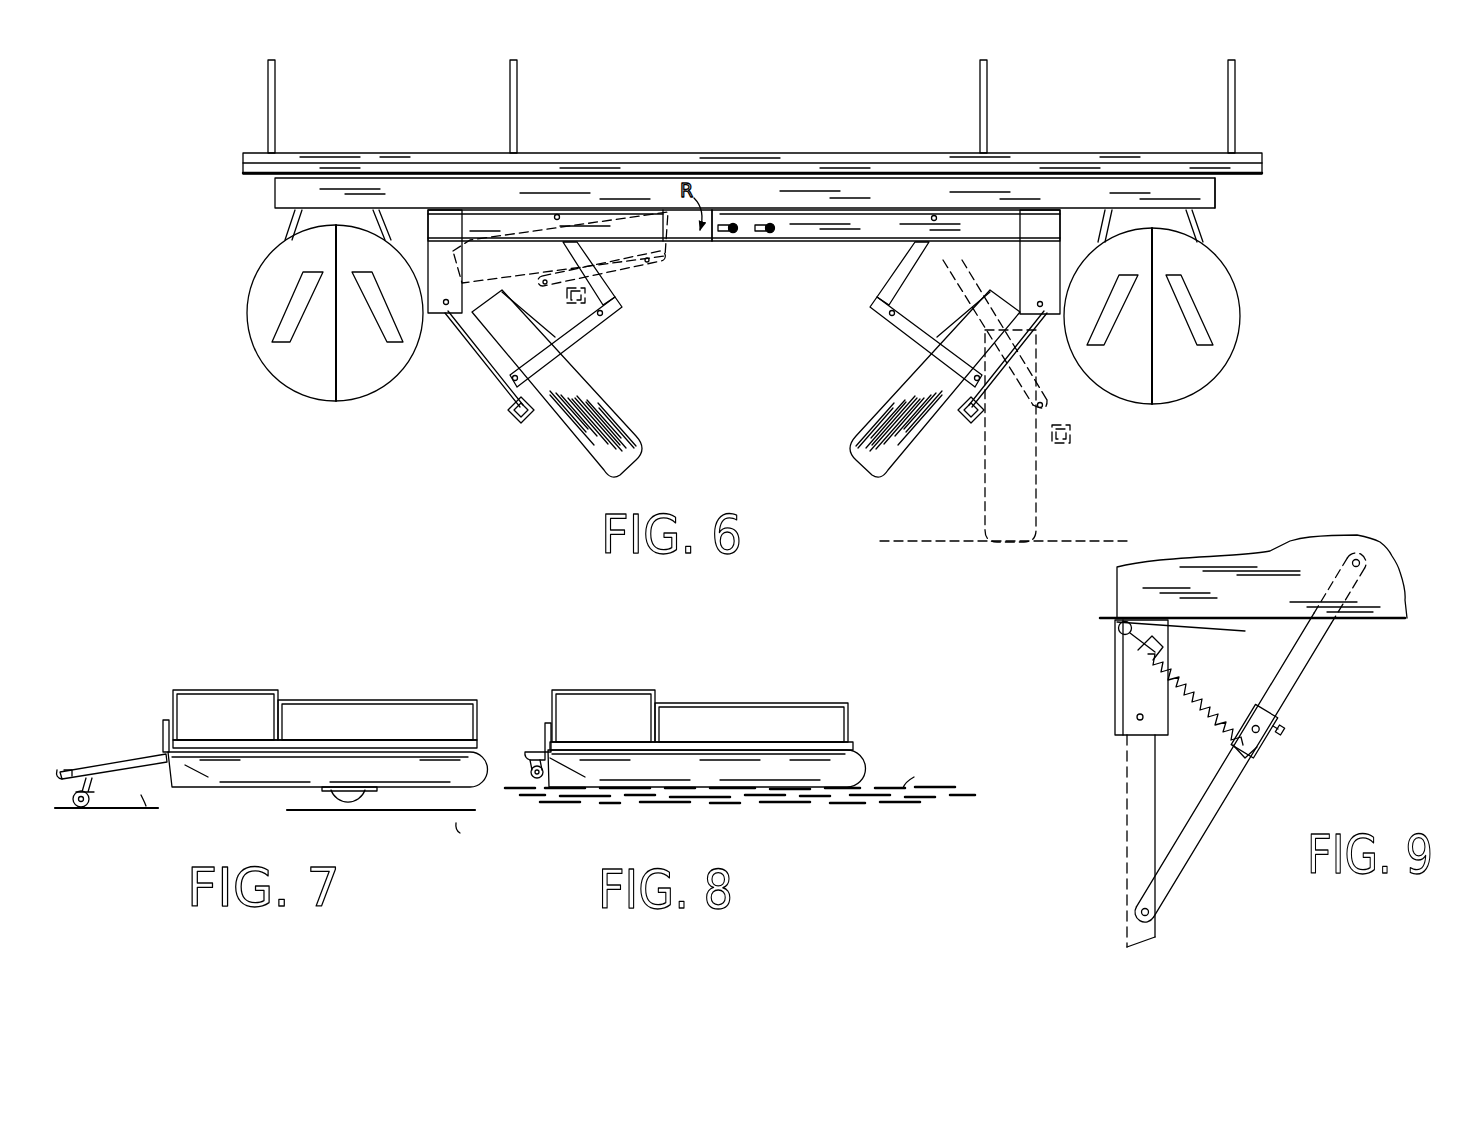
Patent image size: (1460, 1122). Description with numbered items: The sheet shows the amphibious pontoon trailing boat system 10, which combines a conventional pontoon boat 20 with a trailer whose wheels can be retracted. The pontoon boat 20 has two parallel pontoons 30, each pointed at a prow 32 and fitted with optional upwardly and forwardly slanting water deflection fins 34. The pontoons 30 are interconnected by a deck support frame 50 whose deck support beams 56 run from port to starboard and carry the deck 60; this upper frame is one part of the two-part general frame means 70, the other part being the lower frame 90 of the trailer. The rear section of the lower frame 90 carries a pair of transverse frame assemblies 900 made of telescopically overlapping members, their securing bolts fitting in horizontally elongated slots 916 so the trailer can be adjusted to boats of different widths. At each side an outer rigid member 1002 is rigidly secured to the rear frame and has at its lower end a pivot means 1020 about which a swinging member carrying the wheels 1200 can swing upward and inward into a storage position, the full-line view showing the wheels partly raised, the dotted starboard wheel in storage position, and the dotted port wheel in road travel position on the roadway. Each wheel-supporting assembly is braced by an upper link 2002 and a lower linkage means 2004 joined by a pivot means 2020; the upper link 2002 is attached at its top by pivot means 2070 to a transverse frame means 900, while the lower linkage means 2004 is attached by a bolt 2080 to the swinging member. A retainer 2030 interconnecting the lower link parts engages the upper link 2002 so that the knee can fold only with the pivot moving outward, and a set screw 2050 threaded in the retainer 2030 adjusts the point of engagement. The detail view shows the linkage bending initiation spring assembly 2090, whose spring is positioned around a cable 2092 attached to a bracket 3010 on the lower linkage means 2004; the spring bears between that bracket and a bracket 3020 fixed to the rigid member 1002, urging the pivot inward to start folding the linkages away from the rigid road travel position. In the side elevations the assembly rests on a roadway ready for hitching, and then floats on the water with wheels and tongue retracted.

In FIG. 6, the amphibious pontoon trailing boat system 10 is at (424, 99).
In FIG. 7, the amphibious pontoon trailing boat system 10 is at (148, 708).
In FIG. 8, the amphibious pontoon trailing boat system 10 is at (861, 705).
In FIG. 7, the pontoon boat 20 is at (400, 690).
In FIG. 8, the pontoon boat 20 is at (870, 758).
In FIG. 6, the pontoons 30 is at (298, 400).
In FIG. 6, the prow 32 is at (340, 385).
In FIG. 6, the water deflection fins 34 is at (383, 332).
In FIG. 6, the deck support frame 50 is at (752, 200).
In FIG. 6, the deck support beams 56 is at (432, 186).
In FIG. 6, the deck 60 is at (288, 155).
In FIG. 6, the two-part general frame means 70 is at (1213, 206).
In FIG. 6, the lower frame 90 is at (486, 220).
In FIG. 6, the transverse frame assemblies 900 is at (1014, 220).
In FIG. 9, the transverse frame assemblies 900 is at (1392, 593).
In FIG. 6, the horizontally elongated slots 916 is at (769, 237).
In FIG. 9, the outer rigid member 1002 is at (1114, 701).
In FIG. 9, the pivot means 1020 is at (1139, 722).
In FIG. 6, the wheels 1200 is at (609, 396).
In FIG. 9, the upper link 2002 is at (1312, 656).
In FIG. 9, the lower linkage means 2004 is at (1236, 803).
In FIG. 9, the pivot means 2020 is at (1268, 712).
In FIG. 9, the retainer 2030 is at (1261, 728).
In FIG. 9, the set screw 2050 is at (1284, 732).
In FIG. 6, the pivot means 2070 is at (560, 214).
In FIG. 9, the pivot means 2070 is at (1361, 560).
In FIG. 9, the bolt 2080 is at (1152, 911).
In FIG. 9, the linkage bending initiation spring assembly 2090 is at (1183, 680).
In FIG. 9, the cable 2092 is at (1133, 644).
In FIG. 9, the bracket 3010 is at (1248, 760).
In FIG. 9, the bracket 3020 is at (1120, 624).